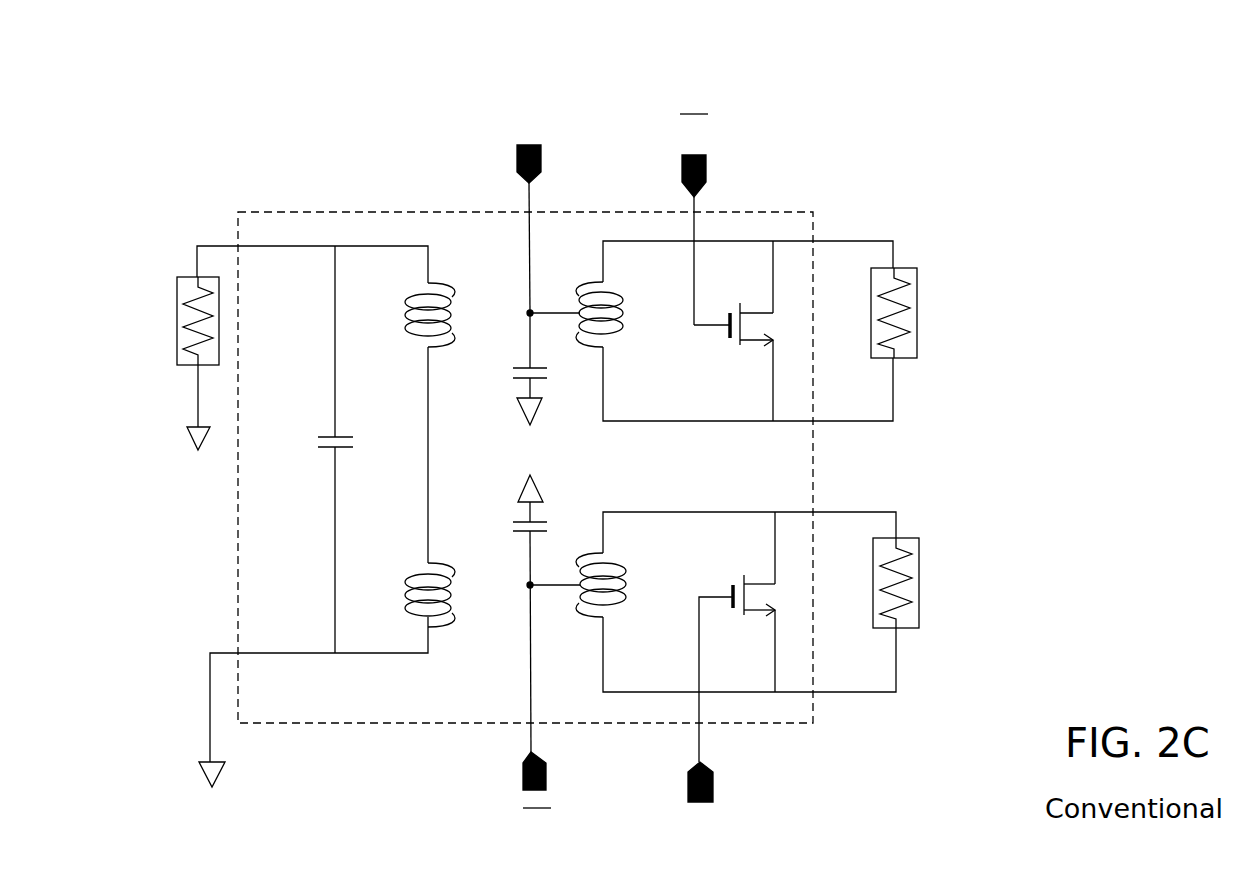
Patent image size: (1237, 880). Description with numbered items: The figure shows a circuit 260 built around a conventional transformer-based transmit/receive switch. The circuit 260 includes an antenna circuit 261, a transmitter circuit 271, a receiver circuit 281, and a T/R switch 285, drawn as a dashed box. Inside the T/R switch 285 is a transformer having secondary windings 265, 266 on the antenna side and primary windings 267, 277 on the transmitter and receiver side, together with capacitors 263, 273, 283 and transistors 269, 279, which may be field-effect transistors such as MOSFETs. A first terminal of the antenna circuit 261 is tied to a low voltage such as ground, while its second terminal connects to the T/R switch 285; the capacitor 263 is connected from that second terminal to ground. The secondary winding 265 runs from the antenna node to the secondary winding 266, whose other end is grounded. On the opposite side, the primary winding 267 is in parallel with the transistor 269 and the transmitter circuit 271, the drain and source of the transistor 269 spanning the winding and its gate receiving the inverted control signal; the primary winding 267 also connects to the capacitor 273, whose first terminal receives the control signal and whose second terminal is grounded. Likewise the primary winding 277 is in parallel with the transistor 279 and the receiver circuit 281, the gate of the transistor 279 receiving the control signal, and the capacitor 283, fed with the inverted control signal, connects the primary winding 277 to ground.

The circuit 260 is at (1138, 57).
The antenna circuit 261 is at (177, 290).
The capacitor 263 is at (320, 432).
The secondary winding 265 is at (422, 290).
The secondary winding 266 is at (426, 558).
The primary winding 267 is at (627, 299).
The transistor 269 is at (722, 338).
The transmitter circuit 271 is at (927, 343).
The capacitor 273 is at (508, 378).
The primary winding 277 is at (627, 570).
The transistor 279 is at (748, 617).
The receiver circuit 281 is at (927, 613).
The capacitor 283 is at (500, 522).
The T/R switch 285 is at (305, 212).